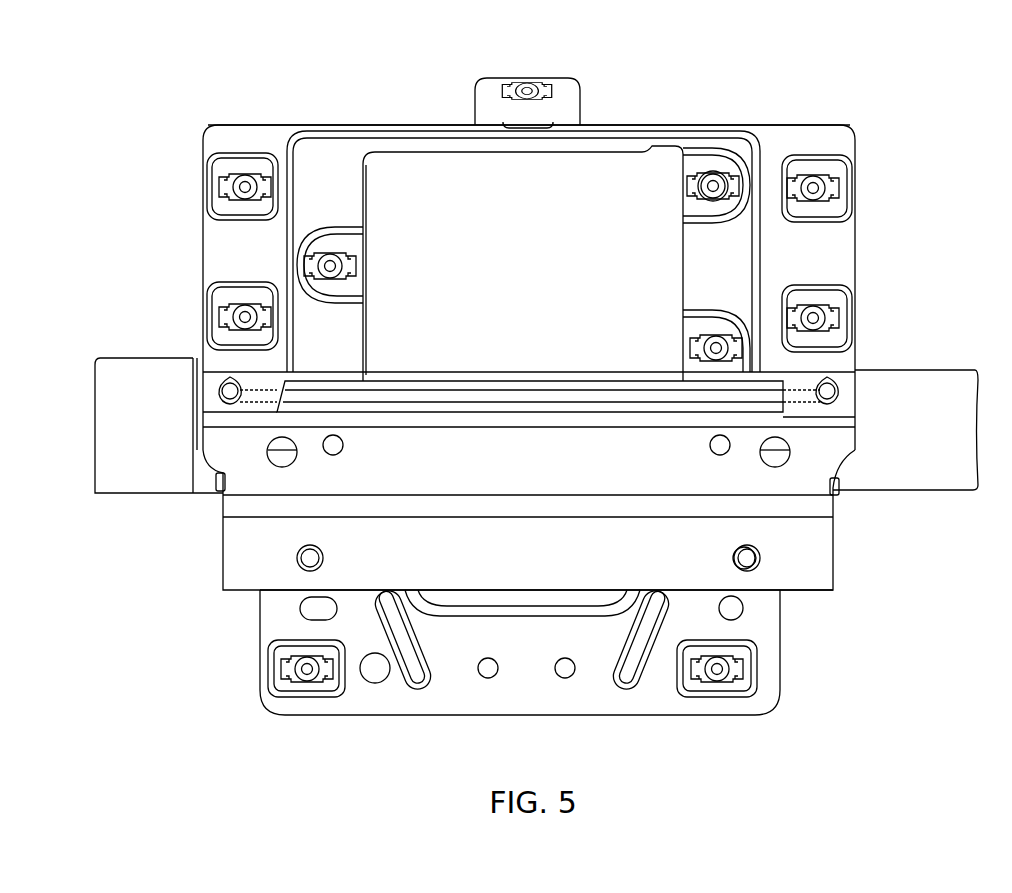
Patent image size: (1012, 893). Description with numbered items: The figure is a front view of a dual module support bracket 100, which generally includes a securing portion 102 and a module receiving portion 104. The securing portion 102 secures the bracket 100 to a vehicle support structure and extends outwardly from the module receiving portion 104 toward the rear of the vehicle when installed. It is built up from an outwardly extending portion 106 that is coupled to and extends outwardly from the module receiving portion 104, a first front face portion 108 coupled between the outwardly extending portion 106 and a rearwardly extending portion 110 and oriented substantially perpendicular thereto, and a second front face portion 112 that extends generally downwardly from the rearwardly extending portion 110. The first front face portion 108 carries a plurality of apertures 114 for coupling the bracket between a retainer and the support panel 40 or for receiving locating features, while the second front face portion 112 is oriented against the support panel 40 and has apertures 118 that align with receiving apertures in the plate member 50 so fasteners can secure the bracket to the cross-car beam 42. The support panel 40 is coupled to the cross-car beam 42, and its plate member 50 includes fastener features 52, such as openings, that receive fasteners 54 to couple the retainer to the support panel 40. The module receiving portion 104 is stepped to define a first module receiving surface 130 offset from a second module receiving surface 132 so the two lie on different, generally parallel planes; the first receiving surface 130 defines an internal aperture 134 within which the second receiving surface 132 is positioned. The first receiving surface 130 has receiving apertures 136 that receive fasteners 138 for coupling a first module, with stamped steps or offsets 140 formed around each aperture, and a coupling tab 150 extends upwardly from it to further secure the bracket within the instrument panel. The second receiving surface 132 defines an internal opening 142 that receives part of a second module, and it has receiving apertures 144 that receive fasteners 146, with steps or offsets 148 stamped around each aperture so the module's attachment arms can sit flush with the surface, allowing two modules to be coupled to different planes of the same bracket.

The module support bracket 100 is at (783, 72).
The securing portion 102 is at (214, 527).
The module receiving portion 104 is at (866, 251).
The outwardly extending portion 106 is at (843, 411).
The first front face portion 108 is at (835, 452).
The rearwardly extending portion 110 is at (820, 505).
The second front face portion 112 is at (812, 573).
The apertures 114 is at (344, 450).
The apertures 118 is at (300, 563).
The first module receiving surface 130 is at (258, 242).
The second module receiving surface 132 is at (348, 187).
The internal aperture 134 is at (295, 192).
The receiving apertures 136 is at (210, 318).
The fasteners 138 is at (238, 312).
The steps or offsets 140 is at (242, 152).
The internal opening 142 is at (368, 210).
The receiving apertures 144 is at (368, 292).
The fasteners 146 is at (712, 198).
The steps or offsets 148 is at (337, 304).
The coupling tab 150 is at (497, 86).
The support panel 40 is at (791, 659).
The cross-car beam 42 is at (938, 389).
The plate member 50 is at (584, 702).
The fastener features 52 is at (289, 708).
The fasteners 54 is at (328, 683).